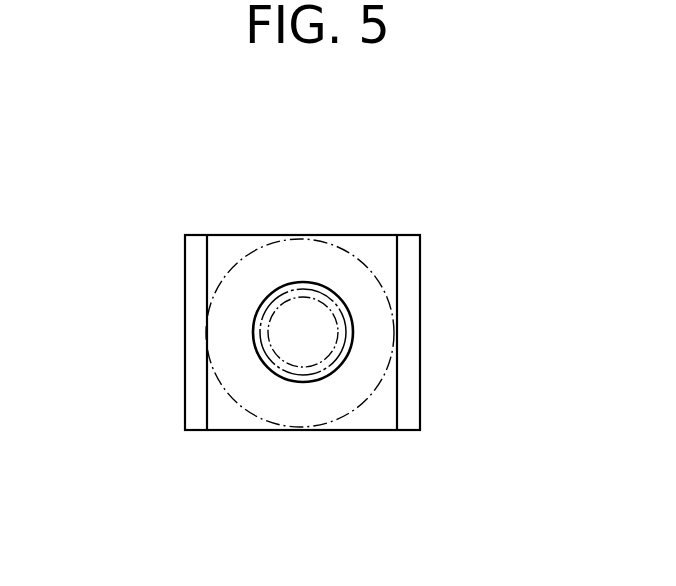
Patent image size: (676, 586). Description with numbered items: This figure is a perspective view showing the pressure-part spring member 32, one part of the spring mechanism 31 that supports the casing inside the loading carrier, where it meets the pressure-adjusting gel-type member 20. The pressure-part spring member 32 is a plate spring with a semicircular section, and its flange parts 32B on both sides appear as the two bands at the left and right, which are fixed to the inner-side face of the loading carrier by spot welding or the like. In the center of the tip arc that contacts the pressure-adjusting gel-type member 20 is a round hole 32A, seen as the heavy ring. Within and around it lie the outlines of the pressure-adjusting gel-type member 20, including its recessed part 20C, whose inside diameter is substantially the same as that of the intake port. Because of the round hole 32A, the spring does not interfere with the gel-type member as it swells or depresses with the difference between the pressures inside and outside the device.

The pressure-adjusting gel-type member 20 is at (244, 415).
The recessed part 20C is at (325, 352).
The spring mechanism 31 is at (385, 233).
The pressure-part spring member 32 is at (368, 293).
The round hole 32A is at (302, 293).
The flange parts 32B is at (193, 338).